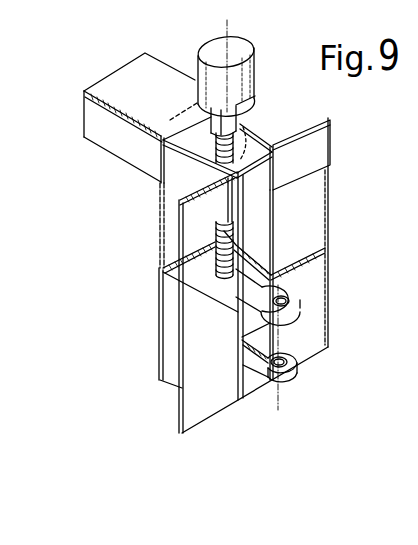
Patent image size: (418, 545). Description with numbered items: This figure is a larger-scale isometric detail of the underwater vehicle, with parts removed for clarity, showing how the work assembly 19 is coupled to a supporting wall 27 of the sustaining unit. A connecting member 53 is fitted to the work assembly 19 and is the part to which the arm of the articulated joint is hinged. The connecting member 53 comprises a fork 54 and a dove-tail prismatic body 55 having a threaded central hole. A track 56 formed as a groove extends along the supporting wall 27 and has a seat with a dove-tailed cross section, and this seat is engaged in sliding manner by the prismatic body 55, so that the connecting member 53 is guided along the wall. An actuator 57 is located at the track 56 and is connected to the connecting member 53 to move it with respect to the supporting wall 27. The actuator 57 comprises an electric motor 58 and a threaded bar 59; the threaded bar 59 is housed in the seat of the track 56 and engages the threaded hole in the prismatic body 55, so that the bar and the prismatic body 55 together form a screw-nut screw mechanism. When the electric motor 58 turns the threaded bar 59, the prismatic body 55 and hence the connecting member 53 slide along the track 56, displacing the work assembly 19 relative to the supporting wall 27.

The work assembly 19 is at (109, 204).
The supporting wall 27 is at (332, 278).
The connecting member 53 is at (303, 306).
The fork 54 is at (300, 377).
The dove-tail prismatic body 55 is at (163, 266).
The track 56 is at (258, 143).
The actuator 57 is at (259, 80).
The electric motor 58 is at (216, 50).
The threaded bar 59 is at (234, 236).